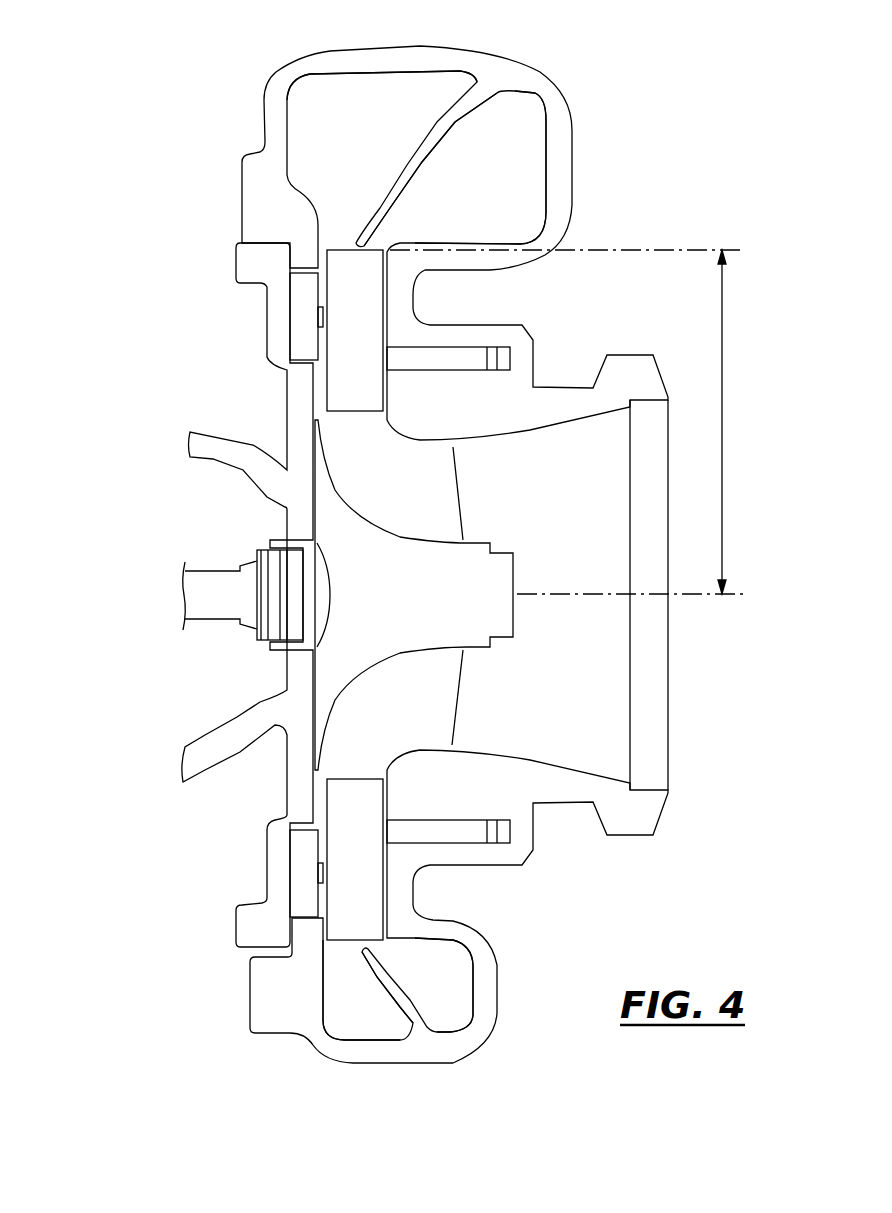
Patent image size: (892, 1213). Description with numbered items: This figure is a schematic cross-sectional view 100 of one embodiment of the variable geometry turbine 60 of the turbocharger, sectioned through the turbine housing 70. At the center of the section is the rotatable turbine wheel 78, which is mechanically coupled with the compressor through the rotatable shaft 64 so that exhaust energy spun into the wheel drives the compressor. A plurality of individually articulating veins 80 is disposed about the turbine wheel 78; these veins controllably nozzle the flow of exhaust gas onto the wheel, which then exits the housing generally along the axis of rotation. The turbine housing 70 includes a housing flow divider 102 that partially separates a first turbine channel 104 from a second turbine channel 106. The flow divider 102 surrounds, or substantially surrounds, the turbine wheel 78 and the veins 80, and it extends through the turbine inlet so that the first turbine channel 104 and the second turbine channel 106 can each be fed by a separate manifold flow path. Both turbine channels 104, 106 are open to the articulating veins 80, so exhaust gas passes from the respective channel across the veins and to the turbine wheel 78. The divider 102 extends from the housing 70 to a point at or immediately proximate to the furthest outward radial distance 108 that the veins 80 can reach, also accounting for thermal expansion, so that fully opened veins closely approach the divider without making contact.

The cross-sectional view 100 is at (118, 80).
The variable geometry turbine 60 is at (160, 216).
The rotatable shaft 64 is at (200, 621).
The turbine housing 70 is at (274, 79).
The turbine wheel 78 is at (473, 537).
The articulating veins 80 is at (375, 250).
The housing flow divider 102 is at (437, 118).
The first turbine channel 104 is at (502, 194).
The second turbine channel 106 is at (367, 151).
The furthest outward radial distance 108 is at (722, 397).